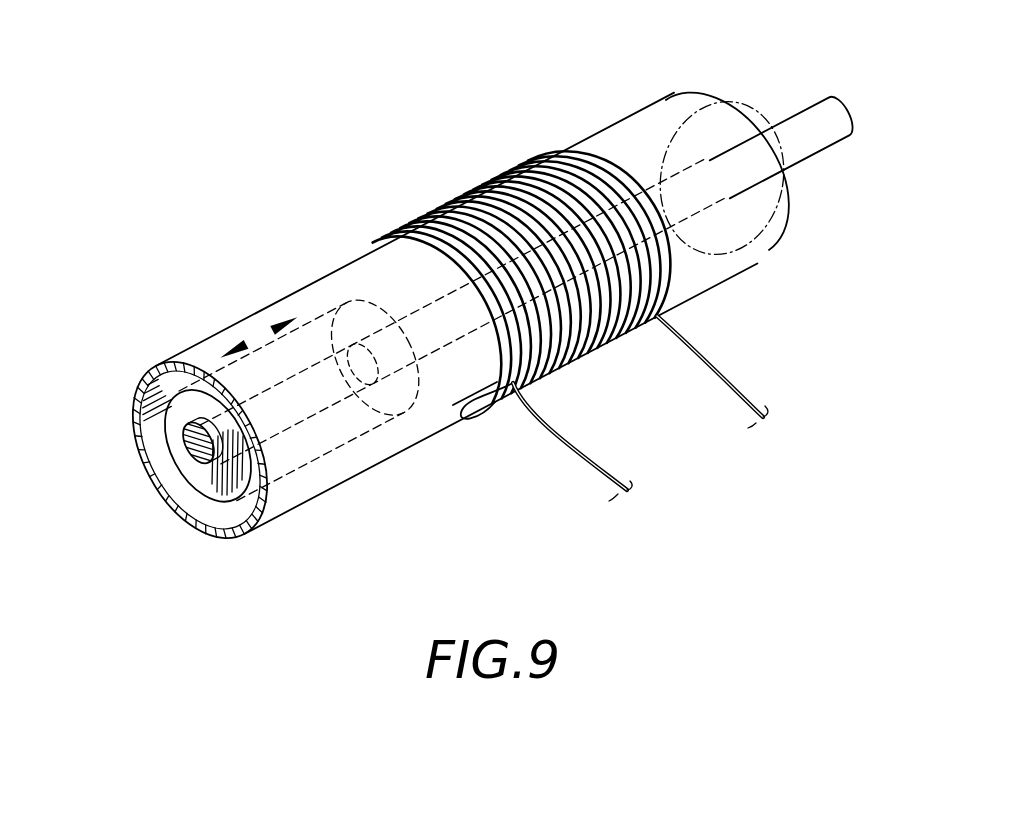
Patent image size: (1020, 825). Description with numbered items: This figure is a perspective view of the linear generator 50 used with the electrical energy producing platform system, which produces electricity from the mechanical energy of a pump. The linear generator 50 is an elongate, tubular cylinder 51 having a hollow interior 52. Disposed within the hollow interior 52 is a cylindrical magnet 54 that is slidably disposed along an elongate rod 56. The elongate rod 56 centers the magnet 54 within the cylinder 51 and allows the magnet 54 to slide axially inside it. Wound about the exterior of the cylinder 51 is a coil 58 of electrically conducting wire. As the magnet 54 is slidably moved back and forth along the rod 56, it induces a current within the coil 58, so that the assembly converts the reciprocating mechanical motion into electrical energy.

The linear generator 50 is at (515, 98).
The tubular cylinder 51 is at (267, 308).
The hollow interior 52 is at (201, 504).
The cylindrical magnet 54 is at (143, 440).
The elongate rod 56 is at (838, 140).
The coil 58 is at (591, 364).